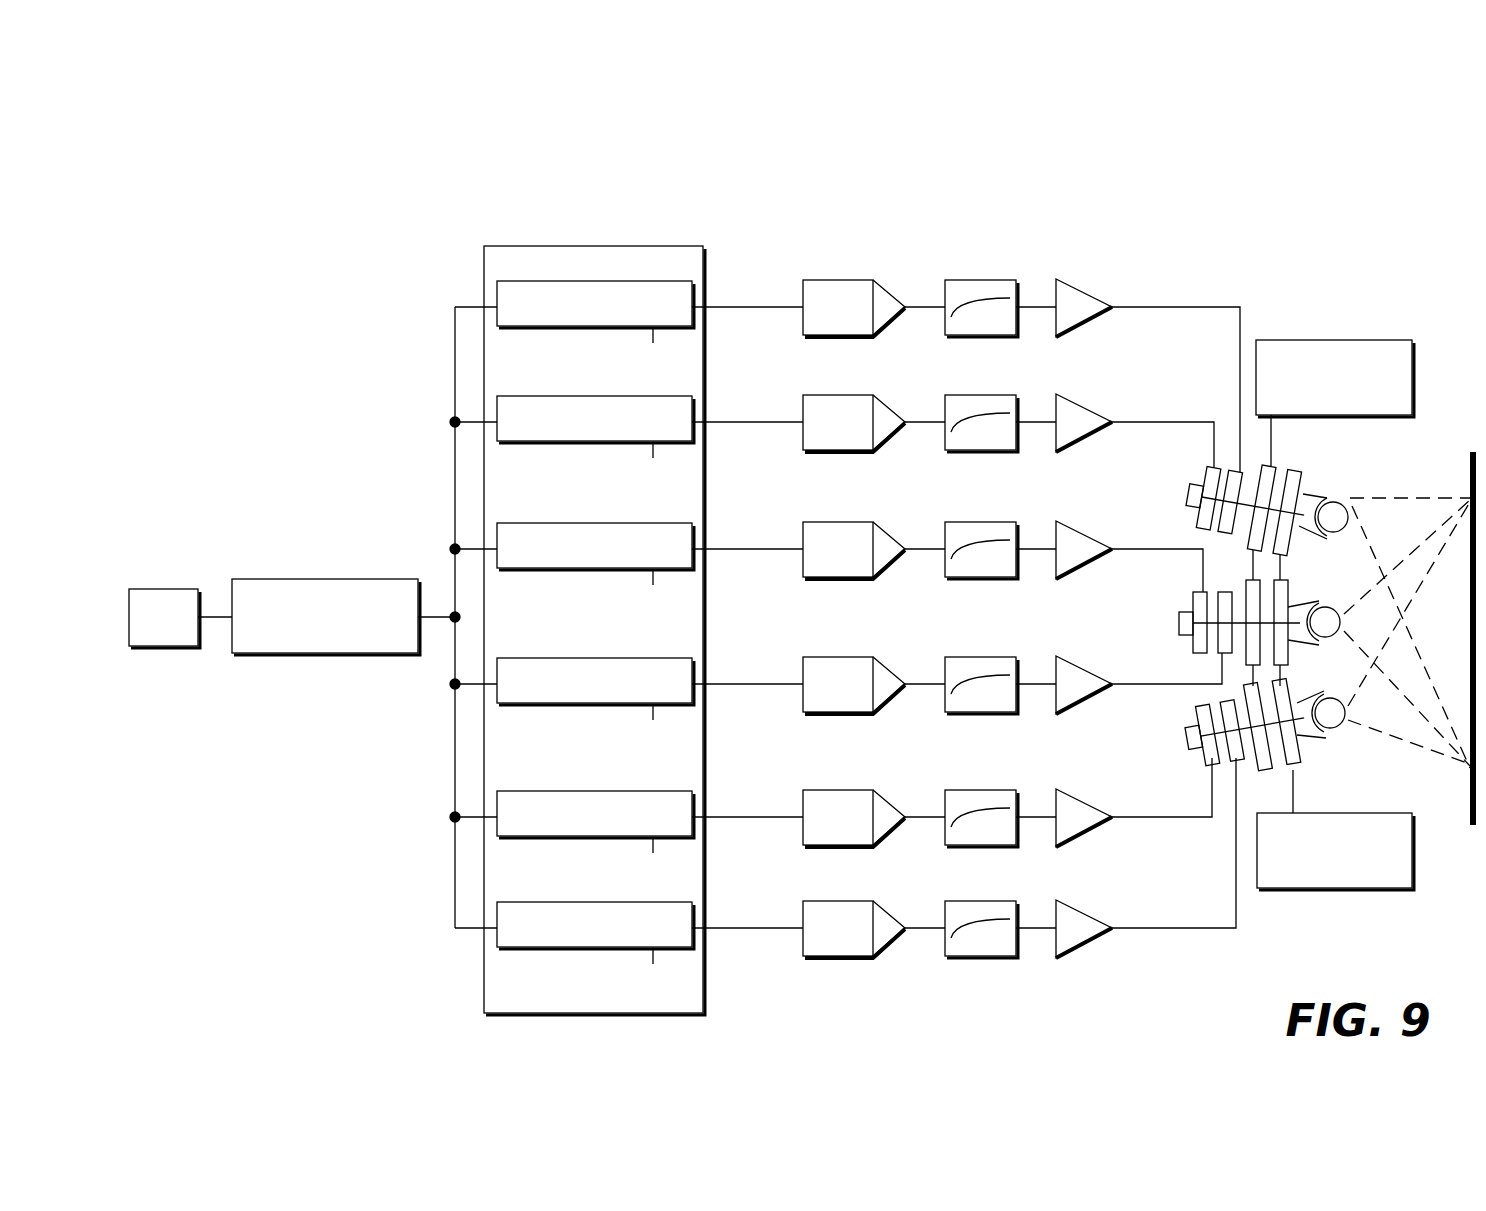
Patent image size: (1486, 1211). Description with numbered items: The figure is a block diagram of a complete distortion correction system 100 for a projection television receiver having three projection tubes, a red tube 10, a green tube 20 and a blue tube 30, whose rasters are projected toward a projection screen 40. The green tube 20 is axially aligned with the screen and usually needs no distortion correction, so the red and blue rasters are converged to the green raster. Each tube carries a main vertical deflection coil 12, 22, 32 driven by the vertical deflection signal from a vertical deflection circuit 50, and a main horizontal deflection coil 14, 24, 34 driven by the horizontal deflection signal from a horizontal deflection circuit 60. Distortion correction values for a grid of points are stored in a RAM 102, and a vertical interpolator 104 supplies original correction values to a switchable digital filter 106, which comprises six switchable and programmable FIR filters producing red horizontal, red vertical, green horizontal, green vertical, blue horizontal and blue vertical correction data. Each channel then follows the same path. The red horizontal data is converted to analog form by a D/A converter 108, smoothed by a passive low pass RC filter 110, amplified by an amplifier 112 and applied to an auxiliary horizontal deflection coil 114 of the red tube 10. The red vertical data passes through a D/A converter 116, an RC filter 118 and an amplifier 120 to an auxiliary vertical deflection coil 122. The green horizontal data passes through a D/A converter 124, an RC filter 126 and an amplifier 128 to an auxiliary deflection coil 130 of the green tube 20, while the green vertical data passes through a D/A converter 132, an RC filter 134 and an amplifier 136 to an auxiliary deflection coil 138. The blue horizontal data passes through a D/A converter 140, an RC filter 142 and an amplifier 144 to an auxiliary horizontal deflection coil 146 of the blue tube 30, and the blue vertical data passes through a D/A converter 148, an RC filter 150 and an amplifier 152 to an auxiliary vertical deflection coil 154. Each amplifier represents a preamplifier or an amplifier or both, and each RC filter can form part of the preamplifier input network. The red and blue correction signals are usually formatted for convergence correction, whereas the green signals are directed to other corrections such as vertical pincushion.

The red tube 10 is at (1188, 490).
The vertical deflection coil 12 is at (1275, 468).
The horizontal deflection coil 14 is at (1302, 480).
The green tube 20 is at (1179, 625).
The vertical deflection coil 22 is at (1246, 589).
The horizontal deflection coil 24 is at (1288, 592).
The blue tube 30 is at (1190, 746).
The vertical deflection coil 32 is at (1266, 771).
The horizontal deflection coil 34 is at (1303, 748).
The display screen 40 is at (1470, 788).
The vertical deflection circuit 50 is at (1338, 340).
The horizontal deflection circuit 60 is at (1360, 890).
The distortion correction system 100 is at (787, 192).
The RAM 102 is at (173, 589).
The vertical interpolator 104 is at (318, 579).
The switchable digital filter 106 is at (597, 228).
The D/A converter 108 is at (845, 280).
The RC filter (red horizontal) 110 is at (975, 280).
The amplifier 112 is at (1078, 290).
The auxiliary horizontal deflection coil 114 is at (1232, 530).
The D/A converter 116 is at (845, 395).
The RC filter 118 is at (975, 395).
The amplifier 120 is at (1078, 405).
The red gun electrode 122 is at (1201, 521).
The D/A converter 124 is at (845, 522).
The RC filter 126 is at (975, 522).
The amplifier 128 is at (1057, 521).
The auxiliary distortion correction deflection coil 130 is at (1193, 606).
The D/A converter 132 is at (845, 657).
The RC filter 134 is at (975, 657).
The amplifier 136 is at (1060, 656).
The auxiliary distortion correction deflection coil 138 is at (1220, 653).
The D/A converter 140 is at (845, 790).
The RC filter 142 is at (975, 790).
The amplifier 144 is at (1070, 800).
The auxiliary distortion correction deflection coil 146 is at (1197, 710).
The D/A converter 148 is at (845, 901).
The RC filter 150 is at (975, 901).
The amplifier 152 is at (1070, 910).
The auxiliary distortion correction deflection coil 154 is at (1230, 760).